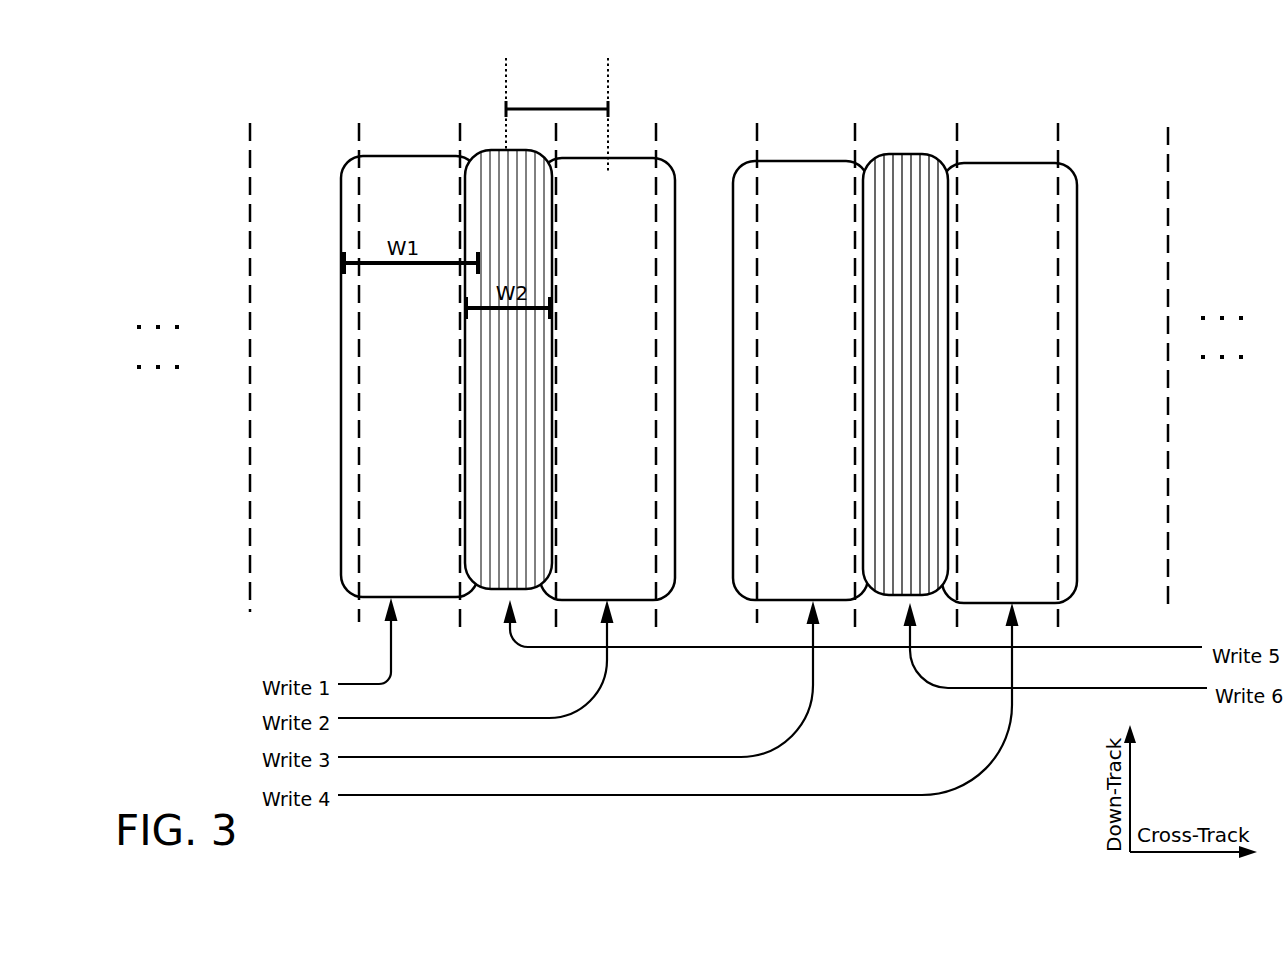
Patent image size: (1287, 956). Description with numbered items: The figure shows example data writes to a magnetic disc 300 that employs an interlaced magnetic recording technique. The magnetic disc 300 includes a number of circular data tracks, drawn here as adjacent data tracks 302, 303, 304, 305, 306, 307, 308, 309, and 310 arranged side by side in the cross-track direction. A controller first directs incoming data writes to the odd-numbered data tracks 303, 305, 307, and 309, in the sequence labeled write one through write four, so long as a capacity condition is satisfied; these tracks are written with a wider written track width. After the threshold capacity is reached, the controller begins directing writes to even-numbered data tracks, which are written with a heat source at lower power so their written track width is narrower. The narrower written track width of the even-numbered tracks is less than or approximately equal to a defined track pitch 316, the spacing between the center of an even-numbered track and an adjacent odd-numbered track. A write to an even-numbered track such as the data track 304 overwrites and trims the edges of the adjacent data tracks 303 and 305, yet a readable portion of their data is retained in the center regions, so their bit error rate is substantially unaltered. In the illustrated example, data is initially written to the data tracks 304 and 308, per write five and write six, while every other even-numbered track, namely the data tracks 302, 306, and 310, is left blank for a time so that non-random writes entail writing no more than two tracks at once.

The magnetic disc 300 is at (358, 118).
The data track 302 is at (290, 212).
The data track 303 is at (390, 212).
The data track 304 is at (489, 209).
The data track 305 is at (589, 212).
The data track 306 is at (685, 212).
The data track 307 is at (790, 212).
The data track 308 is at (892, 212).
The data track 309 is at (992, 212).
The data track 310 is at (1110, 212).
The track pitch 316 is at (557, 115).